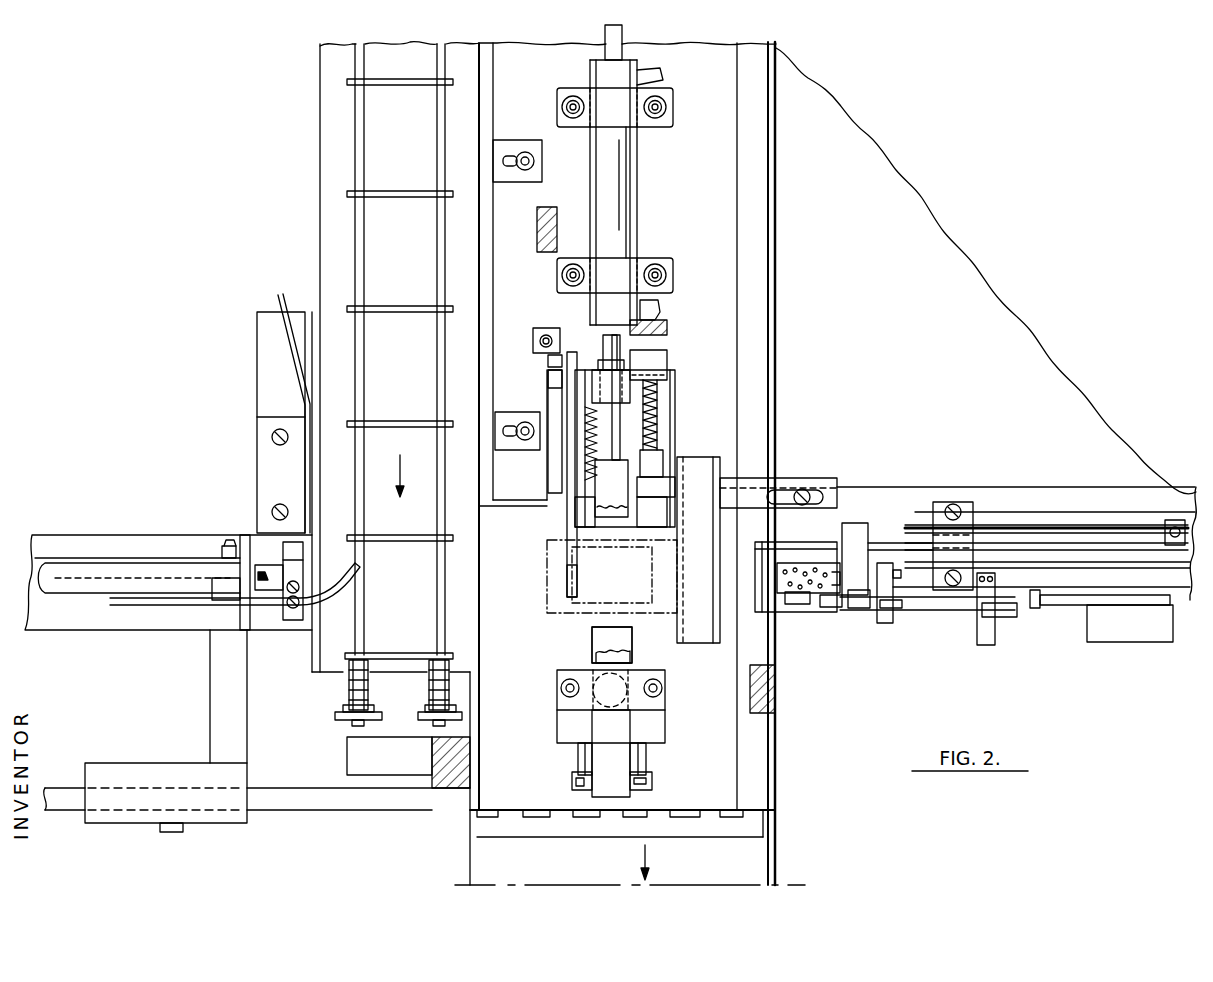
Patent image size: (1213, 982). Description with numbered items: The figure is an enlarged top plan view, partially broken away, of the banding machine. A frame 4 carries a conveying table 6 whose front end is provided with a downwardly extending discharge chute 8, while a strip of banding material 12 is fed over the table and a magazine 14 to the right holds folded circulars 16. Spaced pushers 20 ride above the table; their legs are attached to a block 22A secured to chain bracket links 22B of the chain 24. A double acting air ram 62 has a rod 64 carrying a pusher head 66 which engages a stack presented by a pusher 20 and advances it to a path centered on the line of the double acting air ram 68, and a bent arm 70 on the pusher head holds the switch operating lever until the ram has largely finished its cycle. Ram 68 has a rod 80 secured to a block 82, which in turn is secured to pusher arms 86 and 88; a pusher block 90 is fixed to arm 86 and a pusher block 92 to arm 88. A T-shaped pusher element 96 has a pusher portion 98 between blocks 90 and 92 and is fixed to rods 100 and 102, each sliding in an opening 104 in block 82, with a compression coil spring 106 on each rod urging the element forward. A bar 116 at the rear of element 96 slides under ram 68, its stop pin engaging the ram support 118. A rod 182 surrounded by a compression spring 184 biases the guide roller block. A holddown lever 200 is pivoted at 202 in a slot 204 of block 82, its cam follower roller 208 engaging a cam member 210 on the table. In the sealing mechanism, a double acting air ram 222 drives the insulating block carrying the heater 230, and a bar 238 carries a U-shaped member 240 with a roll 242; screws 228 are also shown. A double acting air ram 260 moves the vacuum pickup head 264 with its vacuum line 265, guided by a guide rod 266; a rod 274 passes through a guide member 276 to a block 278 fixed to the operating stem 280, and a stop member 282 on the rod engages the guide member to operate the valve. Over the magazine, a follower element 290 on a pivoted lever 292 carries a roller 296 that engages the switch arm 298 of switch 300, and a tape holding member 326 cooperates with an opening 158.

The frame 4 is at (462, 758).
The conveying table 6 is at (409, 274).
The discharge chute 8 is at (713, 874).
The strip of banding material 12 is at (600, 658).
The magazine 14 is at (820, 520).
The folded circulars 16 is at (798, 551).
The pushers 20 is at (420, 80).
The block 22A is at (342, 725).
The chain bracket links 22B is at (343, 715).
The chain 24 is at (453, 677).
The double acting air ram 62 is at (96, 533).
The rod 64 is at (268, 573).
The pusher head 66 is at (300, 552).
The double acting air ram 68 is at (655, 226).
The bent arm 70 is at (220, 607).
The rod 80 is at (658, 318).
The block 82 is at (601, 401).
The pusher arm 86 is at (677, 392).
The pusher arm 88 is at (546, 407).
The pusher block 90 is at (662, 512).
The pusher block 92 is at (558, 518).
The T-shaped pusher element 96 is at (658, 487).
The pusher portion 98 is at (600, 540).
The rod 100 is at (652, 462).
The rod 102 is at (572, 492).
The opening 104 is at (673, 346).
The compression coil spring 106 is at (655, 427).
The bar 116 is at (612, 440).
The ram support 118 is at (673, 268).
The opening 158 is at (632, 638).
The rod 182 is at (655, 380).
The compression spring 184 is at (645, 405).
The holddown lever 200 is at (567, 582).
The pivot 202 is at (547, 387).
The slot 204 is at (588, 363).
The cam follower roller 208 is at (560, 362).
The cam member 210 is at (553, 330).
The double acting air ram 222 is at (592, 700).
The screws 228 is at (559, 688).
The heater 230 is at (667, 725).
The bar 238 is at (613, 790).
The U-shaped member 240 is at (580, 763).
The roll 242 is at (652, 773).
The double acting air ram 260 is at (1054, 500).
The vacuum pickup head 264 is at (795, 604).
The vacuum line 265 is at (899, 570).
The guide rod 266 is at (1107, 543).
The rod 274 is at (952, 612).
The guide member 276 is at (992, 618).
The block 278 is at (905, 608).
The operating stem 280 is at (918, 517).
The stop member 282 is at (984, 646).
The follower element 290 is at (828, 608).
The pivoted lever 292 is at (858, 608).
The roller 296 is at (1068, 603).
The switch arm 298 is at (1098, 604).
The switch 300 is at (1120, 612).
The tape holding member 326 is at (602, 638).